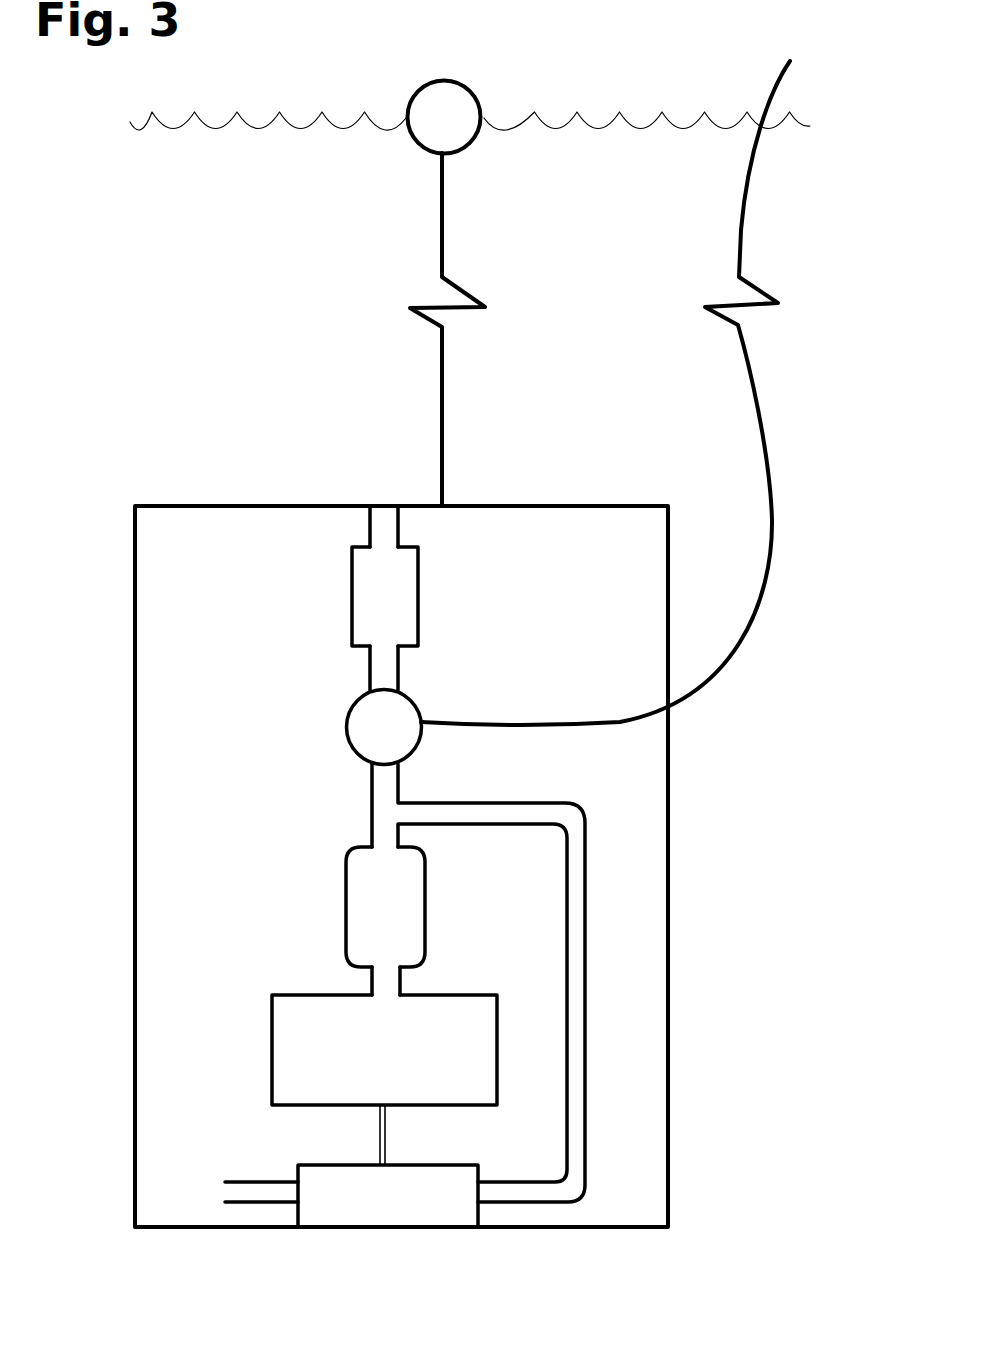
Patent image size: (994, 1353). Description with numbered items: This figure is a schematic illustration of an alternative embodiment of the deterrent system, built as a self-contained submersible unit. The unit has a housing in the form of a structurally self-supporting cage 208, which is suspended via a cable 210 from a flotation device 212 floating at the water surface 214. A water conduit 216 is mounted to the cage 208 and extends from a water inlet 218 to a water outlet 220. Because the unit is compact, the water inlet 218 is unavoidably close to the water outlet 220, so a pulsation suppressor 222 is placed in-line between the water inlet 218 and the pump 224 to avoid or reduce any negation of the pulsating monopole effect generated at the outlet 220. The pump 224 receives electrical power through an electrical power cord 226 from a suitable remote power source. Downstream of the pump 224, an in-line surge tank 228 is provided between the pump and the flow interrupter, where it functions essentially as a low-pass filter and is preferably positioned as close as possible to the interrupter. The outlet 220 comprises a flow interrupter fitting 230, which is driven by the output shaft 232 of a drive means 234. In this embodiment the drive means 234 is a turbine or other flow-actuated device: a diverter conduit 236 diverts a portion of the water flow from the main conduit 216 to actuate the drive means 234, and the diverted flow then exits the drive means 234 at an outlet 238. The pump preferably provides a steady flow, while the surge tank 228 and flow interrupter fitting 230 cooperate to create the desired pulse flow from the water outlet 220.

The cage 208 is at (670, 973).
The cable 210 is at (447, 165).
The flotation device 212 is at (418, 82).
The water surface 214 is at (203, 122).
The water conduit 216 is at (370, 672).
The water inlet 218 is at (375, 503).
The water outlet 220 is at (272, 1048).
The pulsation suppressor 222 is at (418, 595).
The pump 224 is at (346, 727).
The electrical power cord 226 is at (772, 532).
The in-line surge tank 228 is at (346, 872).
The flow interrupter fitting 230 is at (432, 988).
The output shaft 232 is at (387, 1127).
The drive means 234 is at (325, 1165).
The diverter conduit 236 is at (587, 833).
The outlet 238 is at (248, 1205).